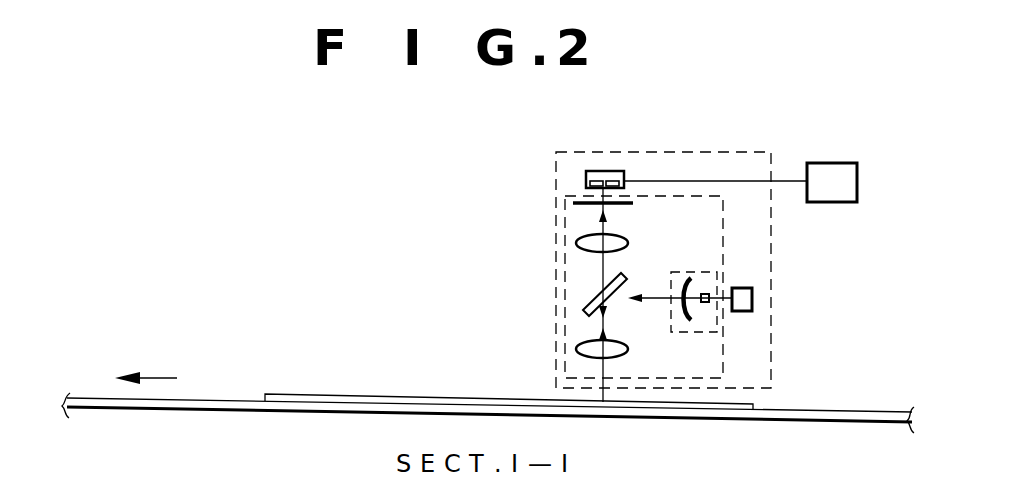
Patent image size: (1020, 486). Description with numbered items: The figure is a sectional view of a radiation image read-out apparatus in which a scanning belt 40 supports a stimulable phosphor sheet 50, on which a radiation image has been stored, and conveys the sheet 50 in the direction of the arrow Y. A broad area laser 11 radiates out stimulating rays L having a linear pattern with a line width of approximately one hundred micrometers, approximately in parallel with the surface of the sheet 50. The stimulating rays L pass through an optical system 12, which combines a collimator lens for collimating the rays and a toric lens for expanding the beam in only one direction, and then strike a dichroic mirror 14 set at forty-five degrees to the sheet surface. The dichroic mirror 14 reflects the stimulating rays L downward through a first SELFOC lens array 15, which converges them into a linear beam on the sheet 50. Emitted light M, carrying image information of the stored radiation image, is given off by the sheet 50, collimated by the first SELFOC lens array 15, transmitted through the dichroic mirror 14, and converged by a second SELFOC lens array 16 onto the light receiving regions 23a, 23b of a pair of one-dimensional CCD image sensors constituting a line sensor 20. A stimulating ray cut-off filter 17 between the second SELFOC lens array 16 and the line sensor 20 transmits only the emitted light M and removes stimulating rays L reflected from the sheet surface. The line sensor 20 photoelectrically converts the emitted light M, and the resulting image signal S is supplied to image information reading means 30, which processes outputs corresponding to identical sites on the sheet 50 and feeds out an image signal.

The broad area laser 11 is at (753, 298).
The optical system 12 is at (687, 272).
The dichroic mirror 14 is at (583, 316).
The first SELFOC lens array 15 is at (622, 354).
The second SELFOC lens array 16 is at (586, 236).
The stimulating ray cut-off filter 17 is at (575, 202).
The line sensor 20 is at (578, 165).
The light receiving region 23a is at (589, 183).
The light receiving region 23b is at (612, 183).
The image information reading means 30 is at (829, 163).
The scanning belt 40 is at (843, 411).
The stimulable phosphor sheet 50 is at (307, 393).
The image signal S is at (720, 181).
The stimulating rays L is at (650, 297).
The emitted light M is at (603, 265).
The conveying direction Y is at (150, 377).